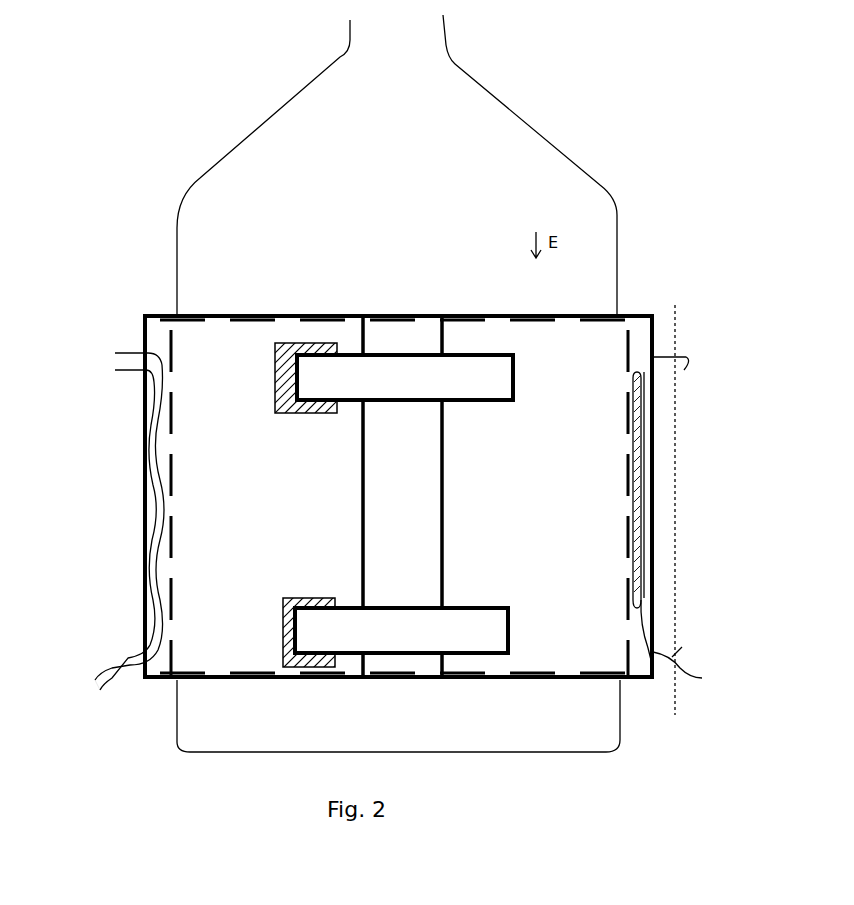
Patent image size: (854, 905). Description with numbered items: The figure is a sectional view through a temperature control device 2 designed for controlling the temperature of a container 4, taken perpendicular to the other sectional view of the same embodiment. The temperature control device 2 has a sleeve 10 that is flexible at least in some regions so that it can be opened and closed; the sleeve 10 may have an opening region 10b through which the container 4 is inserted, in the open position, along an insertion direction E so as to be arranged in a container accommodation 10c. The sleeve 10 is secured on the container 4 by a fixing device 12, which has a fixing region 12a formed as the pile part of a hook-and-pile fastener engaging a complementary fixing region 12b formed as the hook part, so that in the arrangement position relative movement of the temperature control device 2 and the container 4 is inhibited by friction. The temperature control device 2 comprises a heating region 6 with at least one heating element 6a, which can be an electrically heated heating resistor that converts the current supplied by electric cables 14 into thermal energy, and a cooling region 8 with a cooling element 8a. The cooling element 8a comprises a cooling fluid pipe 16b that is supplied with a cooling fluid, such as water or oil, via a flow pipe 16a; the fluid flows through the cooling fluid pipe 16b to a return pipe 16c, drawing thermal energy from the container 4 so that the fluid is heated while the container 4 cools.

The temperature control device 2 is at (112, 237).
The container 4 is at (420, 189).
The heating region 6 is at (645, 500).
The heating element 6a is at (644, 539).
The cooling region 8 is at (148, 590).
The cooling element 8a is at (160, 470).
The sleeve 10 is at (655, 313).
The opening region 10b is at (412, 524).
The container accommodation 10c is at (625, 300).
The fixing device 12 is at (518, 423).
The fixing region 12a is at (446, 391).
The complementary fixing region 12b is at (275, 378).
The electric cables 14 is at (677, 510).
The flow pipe 16a is at (150, 680).
The cooling fluid pipe 16b is at (160, 622).
The return pipe 16c is at (146, 352).